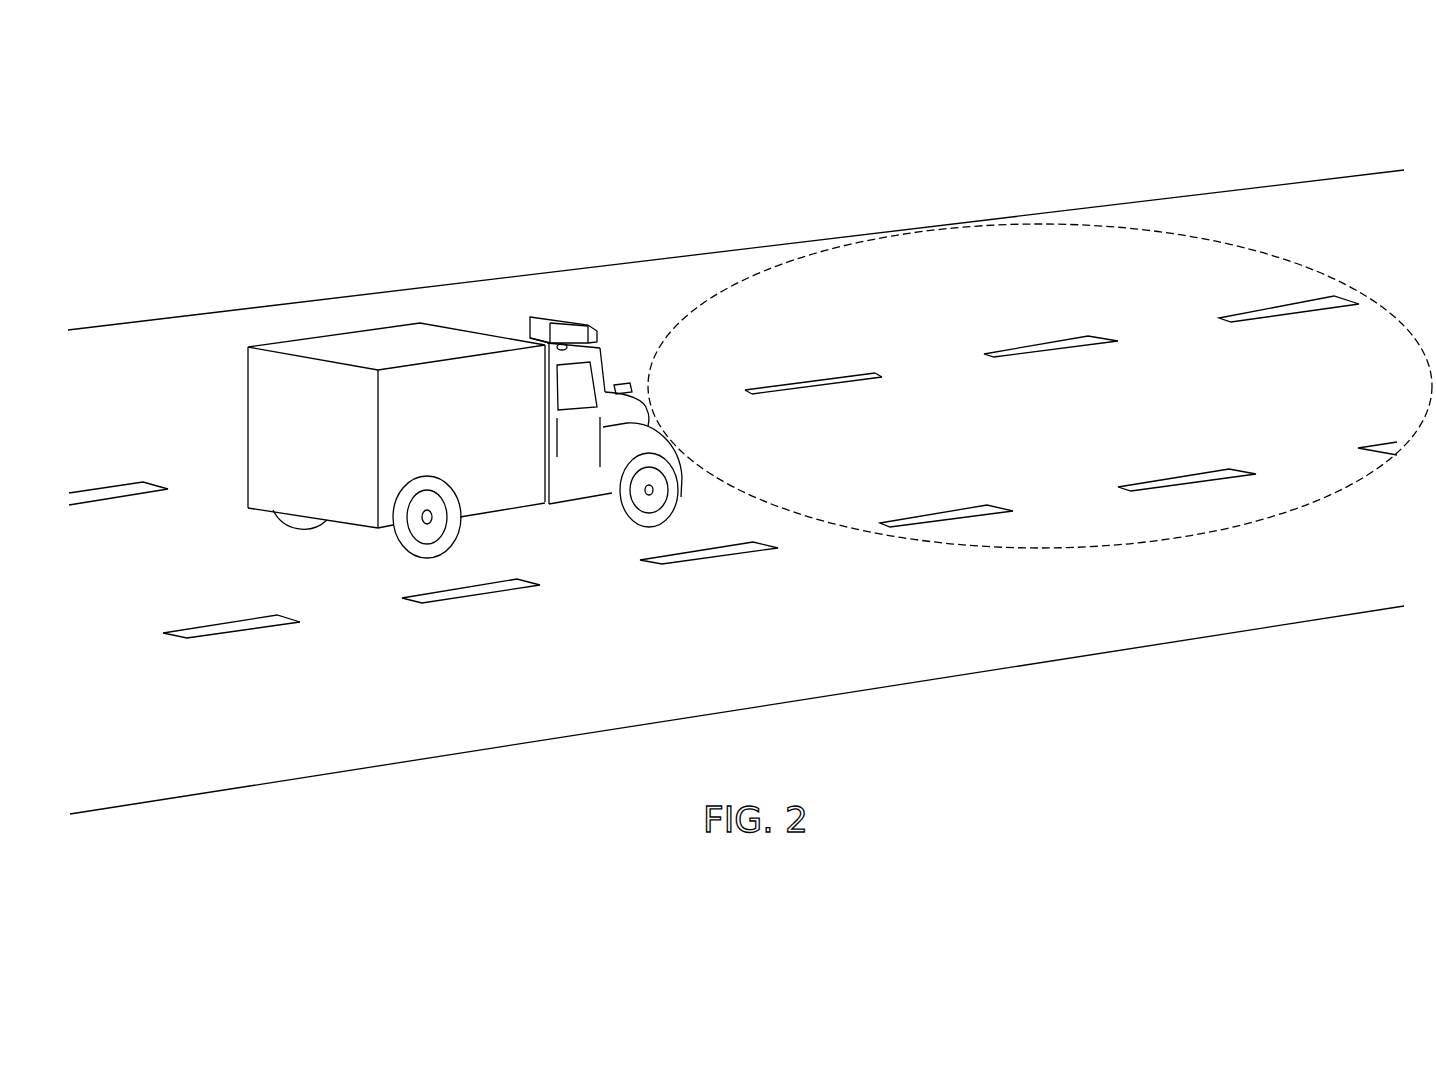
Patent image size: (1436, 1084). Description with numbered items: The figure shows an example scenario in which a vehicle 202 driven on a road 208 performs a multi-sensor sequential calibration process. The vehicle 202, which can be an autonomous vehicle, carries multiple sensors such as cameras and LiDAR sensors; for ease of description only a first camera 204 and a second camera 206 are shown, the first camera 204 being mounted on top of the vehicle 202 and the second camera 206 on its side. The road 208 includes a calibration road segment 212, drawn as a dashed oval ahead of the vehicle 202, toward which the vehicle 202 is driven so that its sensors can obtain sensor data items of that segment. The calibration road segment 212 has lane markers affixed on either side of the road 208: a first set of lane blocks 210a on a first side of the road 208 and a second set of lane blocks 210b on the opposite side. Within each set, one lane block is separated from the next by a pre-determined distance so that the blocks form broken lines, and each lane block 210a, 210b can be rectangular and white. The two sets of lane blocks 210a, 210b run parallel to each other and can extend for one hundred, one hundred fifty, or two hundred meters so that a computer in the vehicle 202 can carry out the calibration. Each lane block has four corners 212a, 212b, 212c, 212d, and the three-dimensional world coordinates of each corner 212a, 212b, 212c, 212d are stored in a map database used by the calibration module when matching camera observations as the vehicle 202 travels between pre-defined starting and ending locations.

The vehicle 202 is at (272, 397).
The first camera 204 is at (572, 317).
The second camera 206 is at (628, 378).
The road 208 is at (562, 717).
The first set of lane blocks 210a is at (1028, 356).
The second set of lane blocks 210b is at (1210, 469).
The calibration road segment 212 is at (1040, 415).
The corner of lane block 212a is at (747, 392).
The corner of lane block 212b is at (767, 397).
The corner of lane block 212c is at (877, 377).
The corner of lane block 212d is at (853, 373).